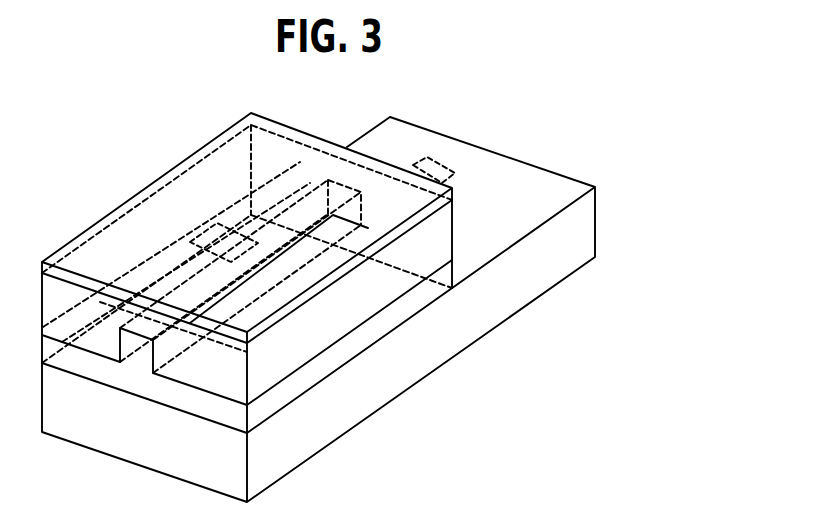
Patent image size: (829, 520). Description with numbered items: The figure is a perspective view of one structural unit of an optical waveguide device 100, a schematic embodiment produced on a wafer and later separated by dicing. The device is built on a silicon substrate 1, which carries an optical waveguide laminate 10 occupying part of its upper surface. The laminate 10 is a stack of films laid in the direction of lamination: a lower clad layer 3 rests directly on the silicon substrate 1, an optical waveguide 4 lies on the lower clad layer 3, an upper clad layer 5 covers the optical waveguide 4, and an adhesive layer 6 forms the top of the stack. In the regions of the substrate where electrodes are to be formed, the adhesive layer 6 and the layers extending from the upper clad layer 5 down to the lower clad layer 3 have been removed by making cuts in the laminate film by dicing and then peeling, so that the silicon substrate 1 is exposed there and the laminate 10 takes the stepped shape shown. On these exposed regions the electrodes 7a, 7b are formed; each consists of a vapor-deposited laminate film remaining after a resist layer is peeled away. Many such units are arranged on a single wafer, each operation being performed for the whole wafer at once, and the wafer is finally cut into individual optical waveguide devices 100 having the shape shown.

The optical waveguide device 100 is at (167, 155).
The silicon substrate 1 is at (493, 292).
The lower clad layer 3 is at (375, 329).
The optical waveguide 4 is at (165, 342).
The upper clad layer 5 is at (308, 330).
The adhesive layer 6 is at (262, 328).
The electrode 7a is at (218, 228).
The electrode 7b is at (430, 166).
The optical waveguide laminate 10 is at (638, 478).